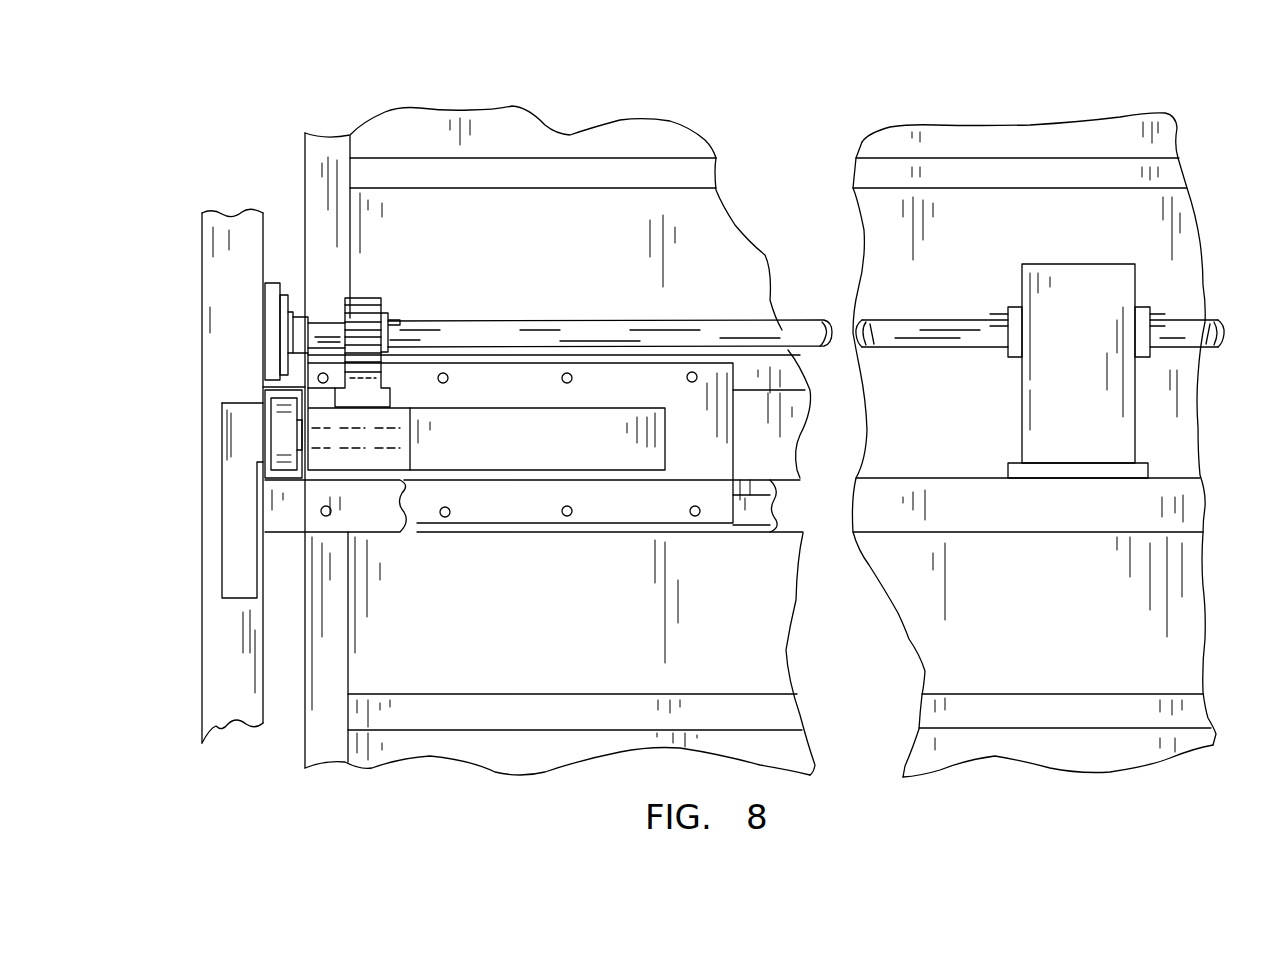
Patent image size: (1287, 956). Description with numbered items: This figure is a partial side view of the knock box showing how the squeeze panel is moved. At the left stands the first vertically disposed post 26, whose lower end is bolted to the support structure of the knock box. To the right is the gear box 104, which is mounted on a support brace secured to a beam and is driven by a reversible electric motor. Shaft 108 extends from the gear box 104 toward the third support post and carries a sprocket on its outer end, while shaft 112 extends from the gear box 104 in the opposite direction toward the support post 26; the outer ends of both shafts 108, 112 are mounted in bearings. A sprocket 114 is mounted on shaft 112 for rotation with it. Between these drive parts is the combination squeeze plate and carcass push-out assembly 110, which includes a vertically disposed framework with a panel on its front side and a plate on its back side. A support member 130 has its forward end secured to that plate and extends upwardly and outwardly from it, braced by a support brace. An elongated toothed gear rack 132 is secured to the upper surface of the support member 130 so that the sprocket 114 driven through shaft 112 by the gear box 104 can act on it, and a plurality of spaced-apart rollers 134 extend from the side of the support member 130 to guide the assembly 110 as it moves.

The first vertically disposed post 26 is at (232, 268).
The gear box 104 is at (1081, 278).
The shaft 108 is at (1198, 330).
The combination squeeze plate and carcass push-out assembly 110 is at (700, 125).
The shaft 112 is at (558, 160).
The sprocket 114 is at (367, 300).
The support member 130 is at (393, 415).
The elongated toothed gear rack 132 is at (381, 372).
The rollers 134 is at (283, 428).